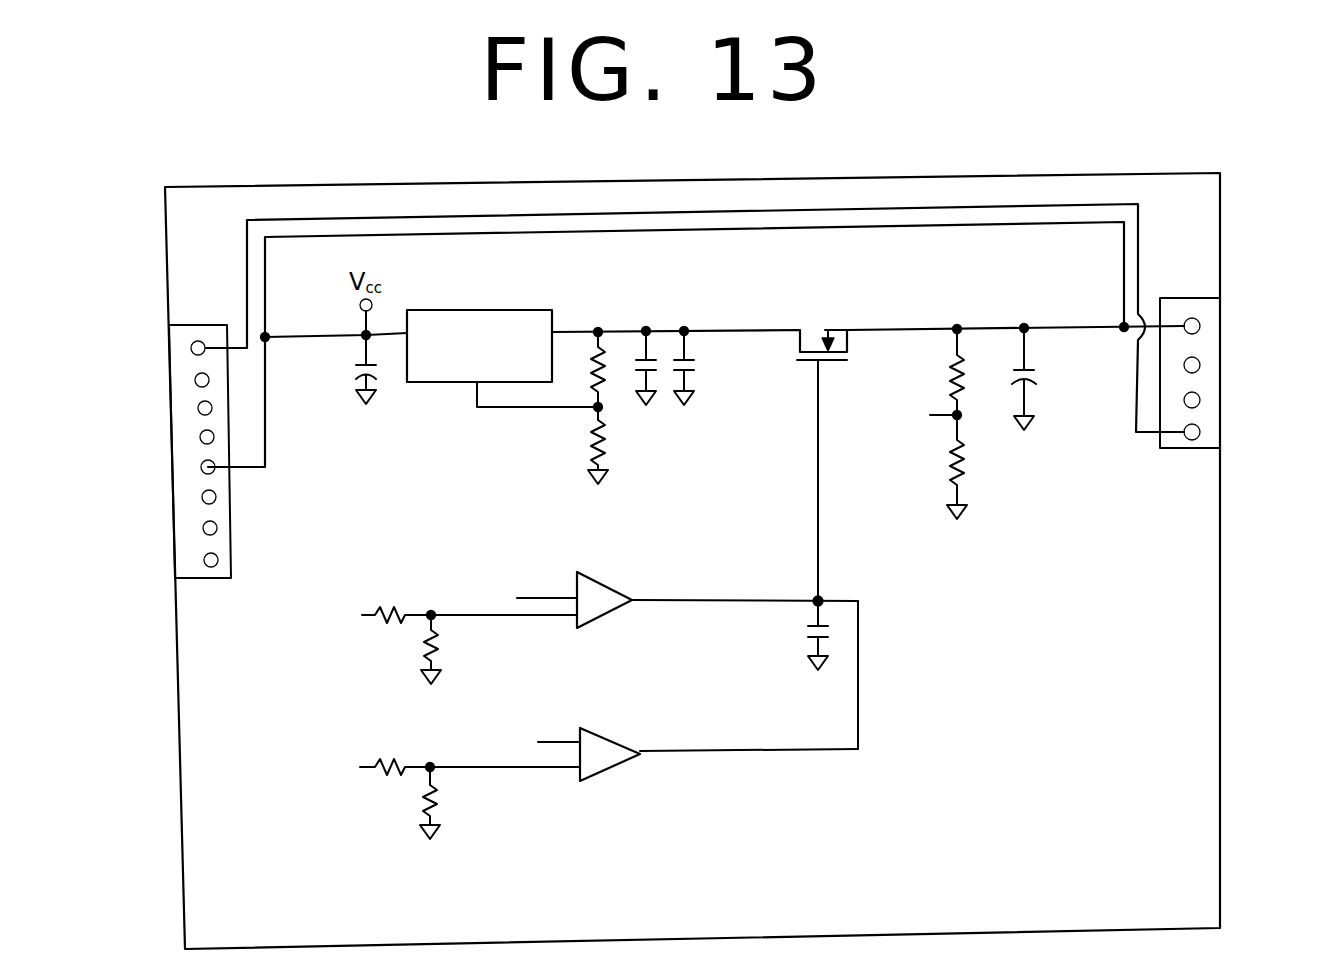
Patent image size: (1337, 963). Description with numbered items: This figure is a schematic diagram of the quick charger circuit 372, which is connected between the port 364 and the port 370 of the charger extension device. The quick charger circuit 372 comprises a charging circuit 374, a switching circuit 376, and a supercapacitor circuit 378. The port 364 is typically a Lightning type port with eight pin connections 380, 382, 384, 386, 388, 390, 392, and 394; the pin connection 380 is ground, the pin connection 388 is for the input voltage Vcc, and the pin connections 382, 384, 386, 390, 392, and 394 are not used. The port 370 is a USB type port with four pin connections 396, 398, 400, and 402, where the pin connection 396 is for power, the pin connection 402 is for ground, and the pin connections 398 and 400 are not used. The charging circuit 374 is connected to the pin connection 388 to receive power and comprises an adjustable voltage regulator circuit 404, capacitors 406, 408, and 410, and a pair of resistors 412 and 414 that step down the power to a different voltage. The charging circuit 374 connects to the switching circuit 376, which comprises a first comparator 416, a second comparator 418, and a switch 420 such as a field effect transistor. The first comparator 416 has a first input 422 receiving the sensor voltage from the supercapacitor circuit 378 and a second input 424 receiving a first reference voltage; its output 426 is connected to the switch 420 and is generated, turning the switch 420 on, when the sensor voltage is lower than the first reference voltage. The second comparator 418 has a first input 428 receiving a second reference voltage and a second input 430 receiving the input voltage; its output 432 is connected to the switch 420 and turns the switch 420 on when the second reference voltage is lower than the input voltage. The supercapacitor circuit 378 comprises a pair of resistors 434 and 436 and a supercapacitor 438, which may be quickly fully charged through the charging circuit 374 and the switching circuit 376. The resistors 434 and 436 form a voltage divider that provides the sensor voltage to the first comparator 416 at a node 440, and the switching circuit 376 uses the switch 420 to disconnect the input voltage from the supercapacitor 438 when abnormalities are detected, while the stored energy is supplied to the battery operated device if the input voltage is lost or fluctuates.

The port 364 is at (201, 311).
The port 370 is at (1186, 297).
The quick charger circuit 372 is at (1235, 626).
The charging circuit 374 is at (453, 467).
The switching circuit 376 is at (878, 691).
The supercapacitor circuit 378 is at (1040, 480).
The pin connection 380 is at (191, 348).
The pin connection 382 is at (195, 380).
The pin connection 384 is at (198, 409).
The pin connection 386 is at (200, 438).
The pin connection 388 is at (201, 468).
The pin connection 390 is at (202, 498).
The pin connection 392 is at (203, 529).
The pin connection 394 is at (204, 561).
The pin connection 396 is at (1200, 326).
The pin connection 398 is at (1200, 365).
The pin connection 400 is at (1200, 400).
The pin connection 402 is at (1200, 433).
The adjustable voltage regulator circuit 404 is at (472, 306).
The capacitor 406 is at (352, 378).
The capacitor 408 is at (633, 368).
The capacitor 410 is at (697, 372).
The resistor 412 is at (592, 372).
The resistor 414 is at (590, 444).
The first comparator 416 is at (613, 736).
The second comparator 418 is at (605, 582).
The switch 420 is at (835, 320).
The first input 422 is at (553, 742).
The second input 424 is at (373, 762).
The output 426 is at (750, 752).
The first input 428 is at (527, 597).
The second input 430 is at (370, 609).
The output 432 is at (725, 600).
The resistor 434 is at (941, 376).
The resistor 436 is at (942, 468).
The supercapacitor 438 is at (1042, 377).
The node 440 is at (962, 420).